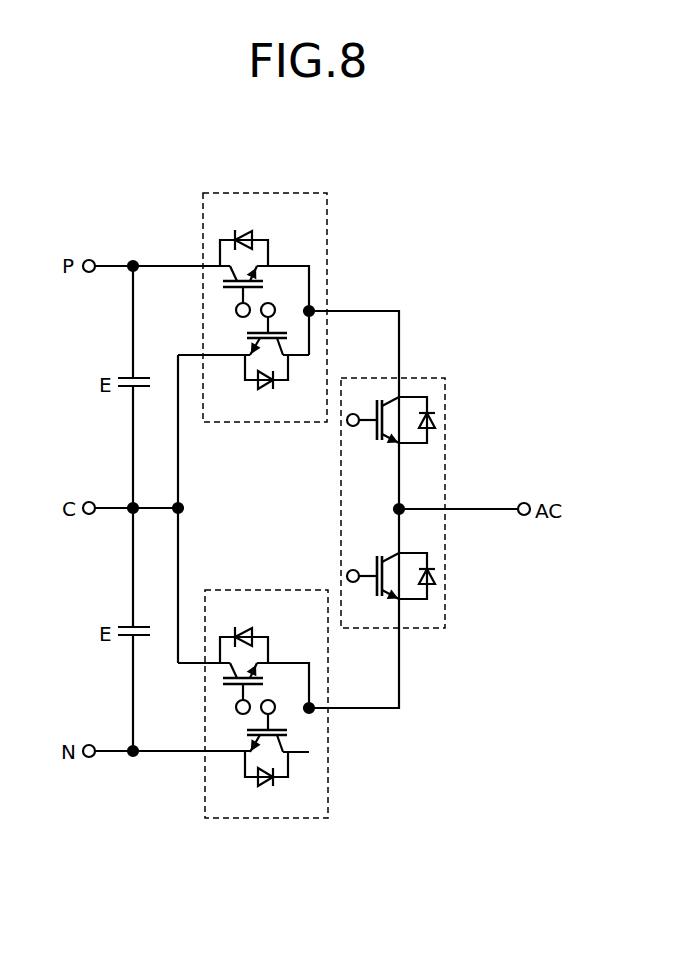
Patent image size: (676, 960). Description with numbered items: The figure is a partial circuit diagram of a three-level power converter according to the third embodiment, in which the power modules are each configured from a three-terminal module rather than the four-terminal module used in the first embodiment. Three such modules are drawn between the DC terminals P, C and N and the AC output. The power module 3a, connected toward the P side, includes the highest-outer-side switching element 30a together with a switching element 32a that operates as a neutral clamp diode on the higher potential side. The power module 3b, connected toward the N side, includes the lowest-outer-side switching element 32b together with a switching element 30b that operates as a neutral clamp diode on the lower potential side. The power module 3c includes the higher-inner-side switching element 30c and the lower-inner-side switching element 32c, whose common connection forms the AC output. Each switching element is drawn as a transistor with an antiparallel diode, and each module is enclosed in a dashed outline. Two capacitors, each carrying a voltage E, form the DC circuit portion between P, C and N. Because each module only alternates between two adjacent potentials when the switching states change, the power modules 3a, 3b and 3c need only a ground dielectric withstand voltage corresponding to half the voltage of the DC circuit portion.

The power module 3a is at (258, 192).
The power module 3b is at (257, 819).
The power module 3c is at (428, 376).
The highest-outer-side switching element 30a is at (284, 249).
The switching element 32a is at (248, 399).
The switching element 30b is at (250, 610).
The lowest-outer-side switching element 32b is at (292, 794).
The higher-inner-side switching element 30c is at (435, 458).
The lower-inner-side switching element 32c is at (435, 613).